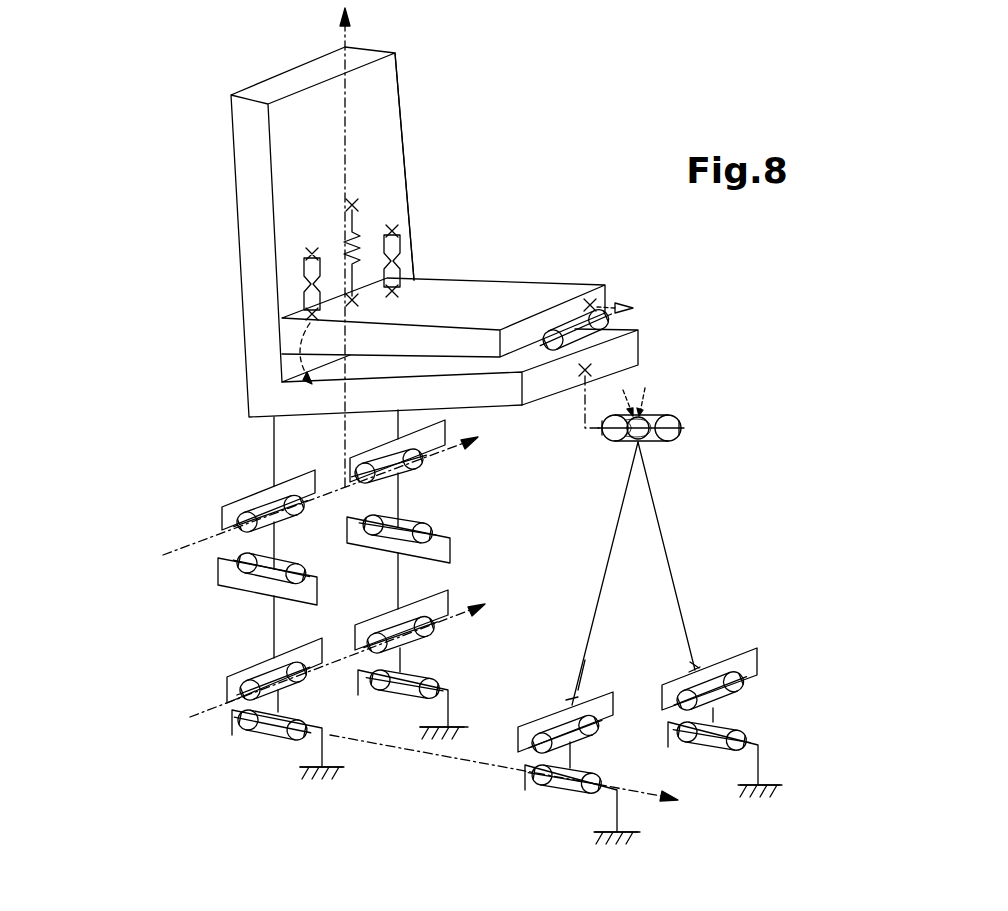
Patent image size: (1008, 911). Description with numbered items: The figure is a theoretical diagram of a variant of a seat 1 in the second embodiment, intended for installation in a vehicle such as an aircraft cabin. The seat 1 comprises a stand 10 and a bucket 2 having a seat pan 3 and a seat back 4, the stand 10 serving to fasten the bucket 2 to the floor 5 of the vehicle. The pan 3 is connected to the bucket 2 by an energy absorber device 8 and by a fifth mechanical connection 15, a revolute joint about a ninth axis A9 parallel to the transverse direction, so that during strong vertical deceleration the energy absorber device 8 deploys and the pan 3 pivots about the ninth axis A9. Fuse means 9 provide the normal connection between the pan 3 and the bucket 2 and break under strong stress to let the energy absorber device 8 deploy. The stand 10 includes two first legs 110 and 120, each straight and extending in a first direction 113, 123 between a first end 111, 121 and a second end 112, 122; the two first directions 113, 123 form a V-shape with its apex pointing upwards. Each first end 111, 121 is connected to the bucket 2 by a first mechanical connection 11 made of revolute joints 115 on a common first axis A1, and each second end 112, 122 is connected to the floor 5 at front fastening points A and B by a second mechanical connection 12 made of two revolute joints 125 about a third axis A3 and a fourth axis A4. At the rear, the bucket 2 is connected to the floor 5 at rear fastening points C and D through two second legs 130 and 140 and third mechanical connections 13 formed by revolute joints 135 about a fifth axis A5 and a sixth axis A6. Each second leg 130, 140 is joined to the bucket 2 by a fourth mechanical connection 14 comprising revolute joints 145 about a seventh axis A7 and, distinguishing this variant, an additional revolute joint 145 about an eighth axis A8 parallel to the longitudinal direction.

The seat 1 is at (553, 150).
The bucket 2 is at (248, 190).
The seat pan 3 is at (518, 280).
The seat back 4 is at (387, 100).
The floor 5 is at (305, 770).
The energy absorber device 8 is at (354, 242).
The fuse means 9 is at (302, 270).
The stand 10 is at (797, 524).
The first mechanical connection 11 is at (660, 408).
The second mechanical connection 12 is at (748, 705).
The third mechanical connection 13 is at (412, 657).
The fourth mechanical connection 14 is at (418, 503).
The fifth mechanical connection 15 is at (575, 308).
The first leg 110 is at (683, 622).
The first end 111 is at (672, 442).
The second end 112 is at (697, 662).
The first direction 113 is at (625, 385).
The revolute joint 115 is at (652, 444).
The first leg 120 is at (592, 640).
The first end 121 is at (616, 442).
The second end 122 is at (582, 668).
The first direction 123 is at (646, 385).
The revolute joint 125 is at (512, 766).
The second leg 130 is at (400, 575).
The revolute joint 135 is at (228, 668).
The second leg 140 is at (272, 633).
The revolute joint 145 is at (248, 512).
The first axis A1 is at (672, 413).
The third axis A3 is at (578, 795).
The fourth axis A4 is at (610, 722).
The fifth axis A5 is at (230, 725).
The sixth axis A6 is at (360, 640).
The seventh axis A7 is at (440, 475).
The eighth axis A8 is at (232, 565).
The ninth axis A9 is at (602, 296).
The front fastening point A is at (762, 762).
The front fastening point B is at (618, 810).
The rear fastening point C is at (452, 712).
The rear fastening point D is at (340, 775).